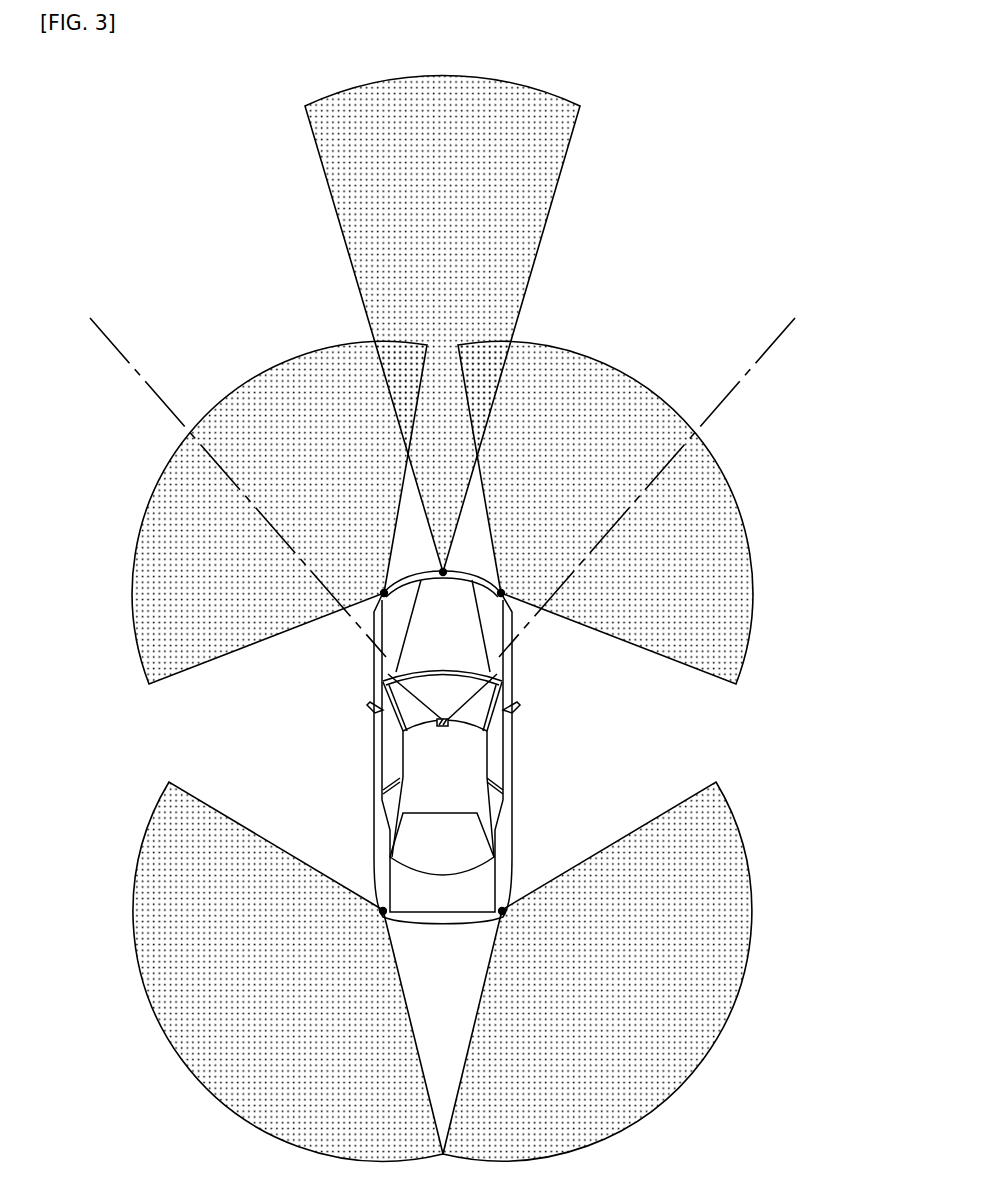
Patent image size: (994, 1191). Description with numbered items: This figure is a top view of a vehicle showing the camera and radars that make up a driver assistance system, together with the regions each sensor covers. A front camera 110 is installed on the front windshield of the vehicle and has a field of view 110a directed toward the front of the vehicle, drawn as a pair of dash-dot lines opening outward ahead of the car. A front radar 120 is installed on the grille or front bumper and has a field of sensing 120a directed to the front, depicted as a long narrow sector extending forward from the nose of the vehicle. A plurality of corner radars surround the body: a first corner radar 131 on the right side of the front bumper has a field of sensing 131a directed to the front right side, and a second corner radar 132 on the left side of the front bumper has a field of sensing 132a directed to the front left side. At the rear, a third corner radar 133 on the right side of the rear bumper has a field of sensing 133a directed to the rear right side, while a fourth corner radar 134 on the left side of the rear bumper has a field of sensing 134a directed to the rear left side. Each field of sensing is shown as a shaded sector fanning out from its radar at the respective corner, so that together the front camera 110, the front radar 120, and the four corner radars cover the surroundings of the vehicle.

The front camera 110 is at (448, 722).
The field of view 110a is at (753, 368).
The front radar 120 is at (444, 571).
The field of sensing 120a is at (525, 213).
The first corner radar 131 is at (502, 592).
The field of sensing 131a is at (635, 392).
The second corner radar 132 is at (383, 592).
The field of sensing 132a is at (252, 392).
The third corner radar 133 is at (502, 913).
The field of sensing 133a is at (702, 1043).
The fourth corner radar 134 is at (383, 913).
The field of sensing 134a is at (183, 1043).